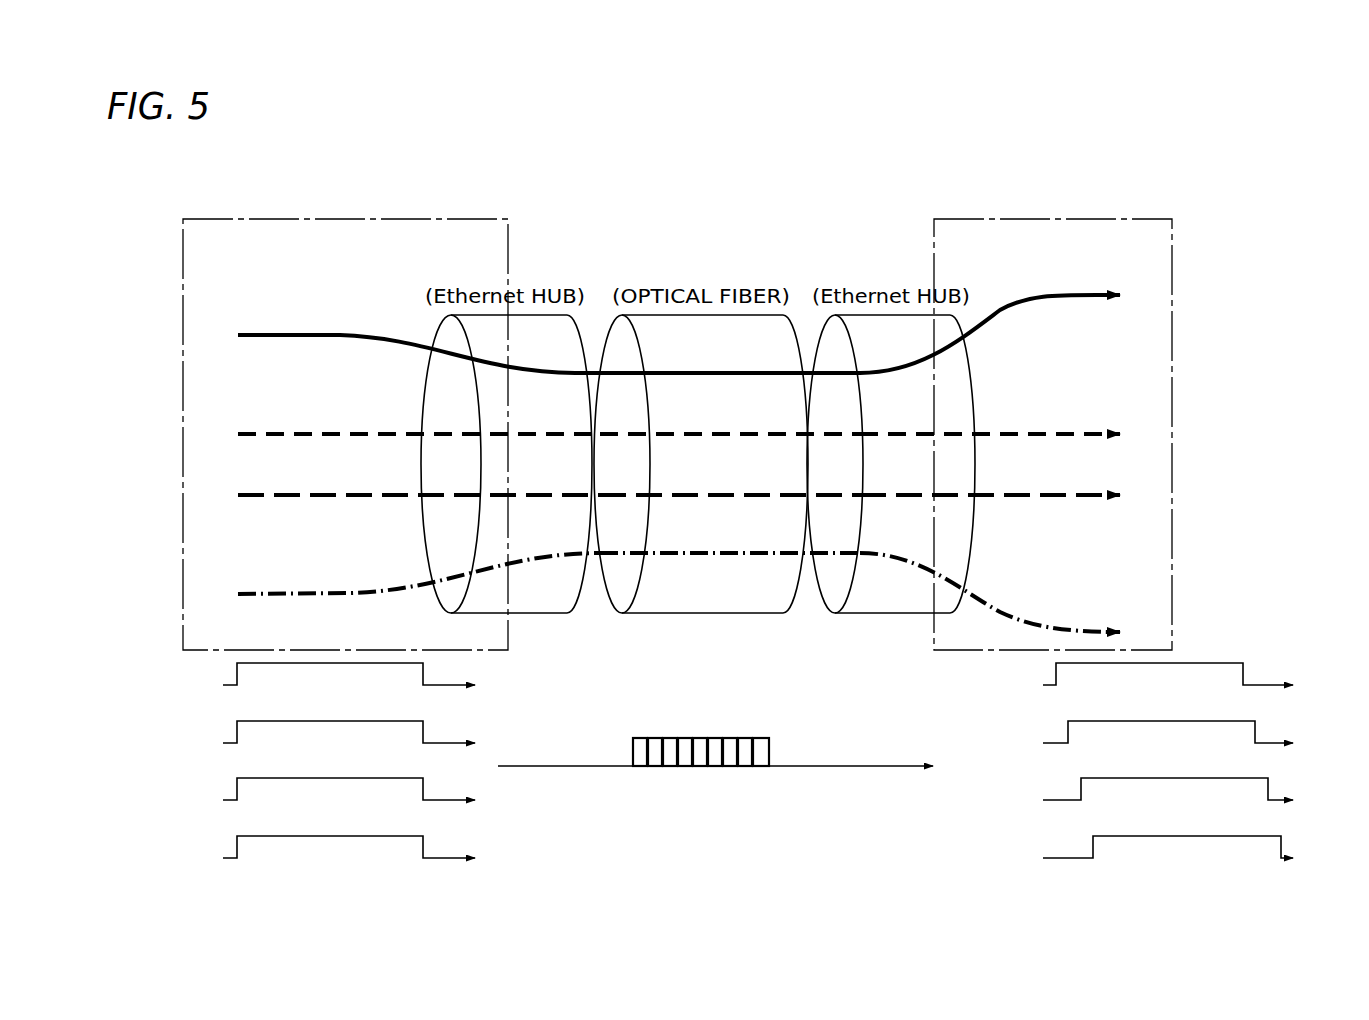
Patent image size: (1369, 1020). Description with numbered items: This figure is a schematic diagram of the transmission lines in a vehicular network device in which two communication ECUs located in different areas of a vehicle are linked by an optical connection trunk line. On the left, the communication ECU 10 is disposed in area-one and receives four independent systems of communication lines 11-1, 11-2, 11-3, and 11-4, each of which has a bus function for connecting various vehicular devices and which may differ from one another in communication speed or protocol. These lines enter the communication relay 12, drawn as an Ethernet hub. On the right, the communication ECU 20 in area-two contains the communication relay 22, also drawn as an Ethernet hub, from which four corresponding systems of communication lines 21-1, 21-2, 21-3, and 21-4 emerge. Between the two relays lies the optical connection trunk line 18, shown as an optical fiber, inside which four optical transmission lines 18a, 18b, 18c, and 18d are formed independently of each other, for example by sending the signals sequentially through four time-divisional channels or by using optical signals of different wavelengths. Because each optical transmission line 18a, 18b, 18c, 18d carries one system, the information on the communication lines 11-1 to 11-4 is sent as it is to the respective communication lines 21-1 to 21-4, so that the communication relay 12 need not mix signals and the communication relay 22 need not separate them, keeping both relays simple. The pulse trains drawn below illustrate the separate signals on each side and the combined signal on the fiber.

The communication ECU 10 is at (240, 218).
The communication ECU 20 is at (980, 218).
The communication line 11-1 is at (255, 333).
The communication line 11-2 is at (270, 432).
The communication line 11-3 is at (270, 493).
The communication line 11-4 is at (256, 592).
The communication relay 12 is at (538, 618).
The optical connection trunk line 18 is at (730, 245).
The optical transmission line 18a is at (700, 371).
The optical transmission line 18b is at (745, 432).
The optical transmission line 18c is at (742, 493).
The optical transmission line 18d is at (697, 551).
The communication line 21-1 is at (1050, 302).
The communication line 21-2 is at (1060, 430).
The communication line 21-3 is at (1058, 500).
The communication line 21-4 is at (1040, 626).
The communication relay 22 is at (886, 618).